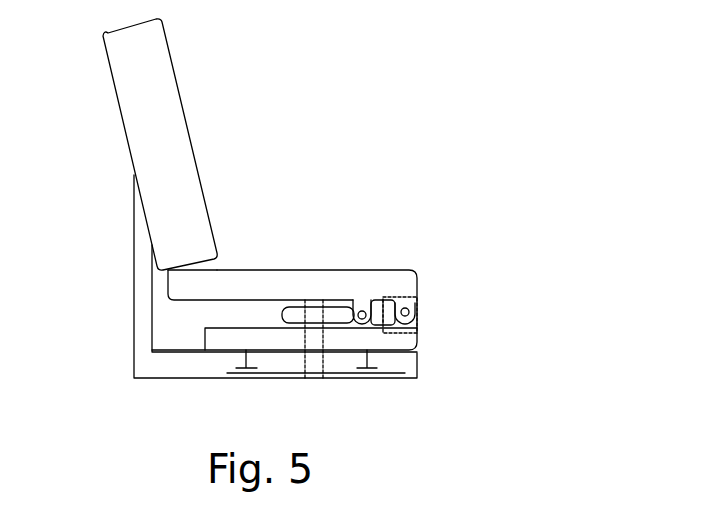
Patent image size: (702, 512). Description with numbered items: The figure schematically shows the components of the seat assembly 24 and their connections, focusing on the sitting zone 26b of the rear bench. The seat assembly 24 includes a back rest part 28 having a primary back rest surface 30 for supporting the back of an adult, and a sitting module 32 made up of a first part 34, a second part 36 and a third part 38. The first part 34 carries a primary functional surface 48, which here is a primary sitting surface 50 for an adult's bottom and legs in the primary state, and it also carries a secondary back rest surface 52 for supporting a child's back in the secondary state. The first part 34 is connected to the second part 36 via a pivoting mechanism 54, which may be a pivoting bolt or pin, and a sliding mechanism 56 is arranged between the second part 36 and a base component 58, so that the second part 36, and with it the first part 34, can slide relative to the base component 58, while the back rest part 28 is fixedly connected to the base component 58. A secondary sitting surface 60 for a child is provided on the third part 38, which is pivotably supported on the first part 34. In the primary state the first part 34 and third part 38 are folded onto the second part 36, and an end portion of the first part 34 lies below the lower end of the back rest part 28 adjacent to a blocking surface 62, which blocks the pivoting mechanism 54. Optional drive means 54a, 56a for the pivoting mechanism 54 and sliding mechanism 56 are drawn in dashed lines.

The seat assembly 24 is at (447, 88).
The sitting zone 26b is at (333, 133).
The back rest part 28 is at (121, 55).
The primary back rest surface 30 is at (192, 66).
The sitting module 32 is at (498, 327).
The first part 34 is at (336, 272).
The second part 36 is at (285, 340).
The third part 38 is at (280, 308).
The primary functional surface 48 is at (322, 247).
The primary sitting surface 50 is at (288, 252).
The secondary back rest surface 52 is at (193, 306).
The pivoting mechanism 54 is at (432, 322).
The drive means 54a is at (421, 302).
The sliding mechanism 56 is at (432, 362).
The drive means 56a is at (317, 366).
The base component 58 is at (197, 379).
The secondary sitting surface 60 is at (341, 294).
The blocking surface 62 is at (212, 282).